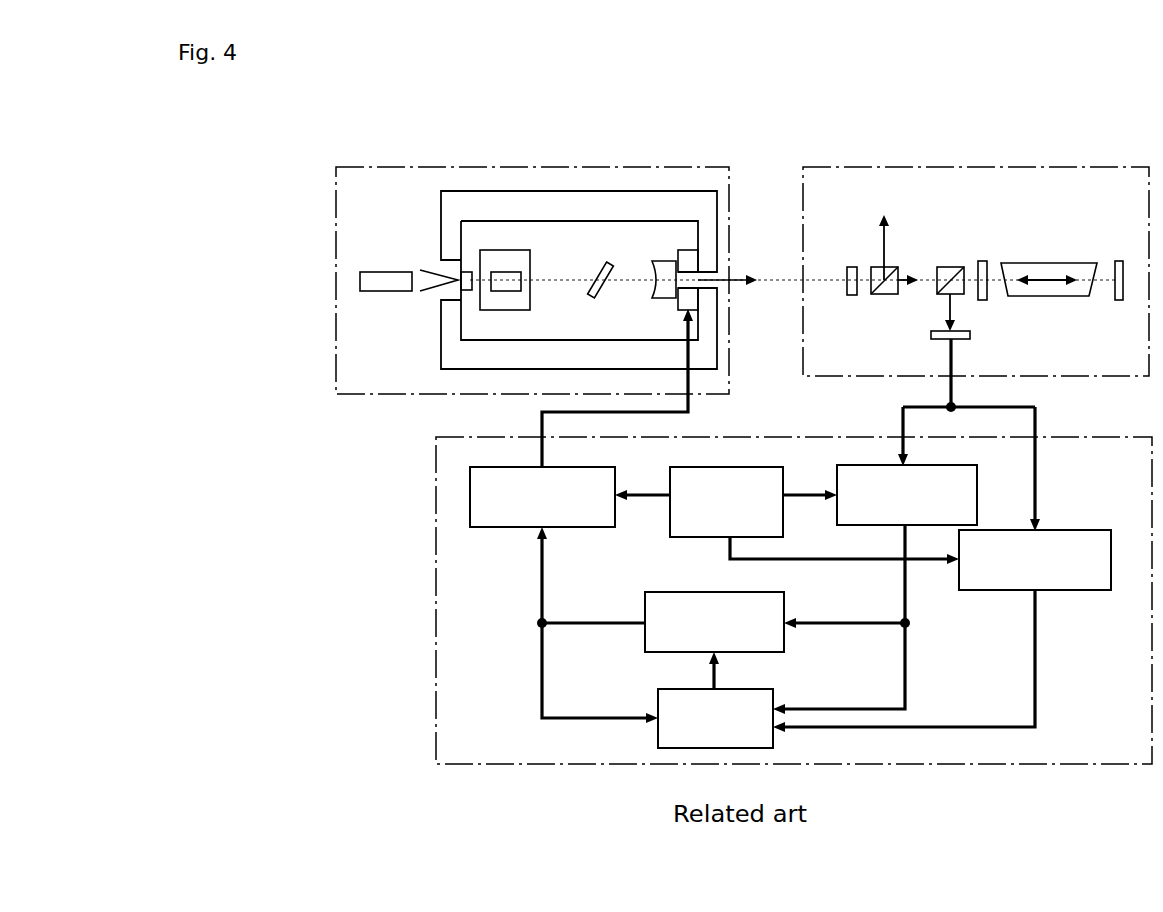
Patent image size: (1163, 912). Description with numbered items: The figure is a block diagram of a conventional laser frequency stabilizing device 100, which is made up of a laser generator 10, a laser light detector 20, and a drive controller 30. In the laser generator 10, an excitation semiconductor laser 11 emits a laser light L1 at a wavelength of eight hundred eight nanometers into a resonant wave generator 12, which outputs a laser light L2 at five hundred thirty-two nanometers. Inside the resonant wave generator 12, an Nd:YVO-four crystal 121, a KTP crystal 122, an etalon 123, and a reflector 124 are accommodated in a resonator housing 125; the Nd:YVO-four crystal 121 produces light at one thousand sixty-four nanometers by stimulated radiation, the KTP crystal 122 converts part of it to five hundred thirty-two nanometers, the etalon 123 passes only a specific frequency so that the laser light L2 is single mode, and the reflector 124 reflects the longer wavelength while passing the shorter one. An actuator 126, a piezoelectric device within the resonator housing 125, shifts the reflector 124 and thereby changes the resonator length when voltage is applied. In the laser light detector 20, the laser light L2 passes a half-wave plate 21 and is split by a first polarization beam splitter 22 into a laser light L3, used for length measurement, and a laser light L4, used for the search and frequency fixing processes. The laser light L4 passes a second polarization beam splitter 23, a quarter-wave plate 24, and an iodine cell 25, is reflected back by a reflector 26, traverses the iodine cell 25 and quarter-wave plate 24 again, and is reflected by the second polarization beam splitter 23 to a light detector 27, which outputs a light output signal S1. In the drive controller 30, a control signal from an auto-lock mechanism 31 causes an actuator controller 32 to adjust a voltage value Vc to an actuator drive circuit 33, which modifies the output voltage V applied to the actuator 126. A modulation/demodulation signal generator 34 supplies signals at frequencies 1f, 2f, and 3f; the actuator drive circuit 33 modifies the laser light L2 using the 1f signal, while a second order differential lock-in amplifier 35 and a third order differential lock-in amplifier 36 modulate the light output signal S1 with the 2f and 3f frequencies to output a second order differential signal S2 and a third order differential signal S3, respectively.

The laser frequency stabilizing device 100 is at (846, 114).
The laser generator 10 is at (377, 167).
The excitation semiconductor laser 11 is at (381, 269).
The resonant wave generator 12 is at (523, 186).
The Nd:YVO4 crystal 121 is at (466, 270).
The KTP crystal 122 is at (503, 273).
The etalon 123 is at (603, 287).
The reflector 124 is at (668, 258).
The resonator housing 125 is at (609, 205).
The actuator 126 is at (688, 250).
The laser light detector 20 is at (992, 167).
The λ/2 plate 21 is at (853, 264).
The first polarization beam splitter 22 is at (892, 266).
The second polarization beam splitter 23 is at (950, 264).
The λ/4 plate 24 is at (982, 260).
The iodine cell 25 is at (1060, 262).
The reflector 26 is at (1118, 260).
The light detector 27 is at (971, 333).
The drive controller 30 is at (1077, 435).
The auto-lock mechanism 31 is at (742, 689).
The actuator controller 32 is at (742, 592).
The actuator drive circuit 33 is at (560, 466).
The modulation/demodulation signal generator 34 is at (730, 466).
The second order differential lock-in amplifier 35 is at (1067, 530).
The third order differential lock-in amplifier 36 is at (927, 466).
The laser light L1 is at (432, 268).
The laser light L2 is at (740, 265).
The laser light L3 is at (891, 226).
The laser light L4 is at (905, 287).
The light output signal S1 is at (953, 356).
The second order differential signal S2 is at (1037, 645).
The third order differential signal S3 is at (907, 598).
The output voltage V is at (697, 408).
The voltage value Vc is at (545, 570).
The 1f Hz frequency signal 1f is at (642, 484).
The 2f Hz frequency signal 2f is at (844, 550).
The 3f Hz frequency signal 3f is at (810, 484).